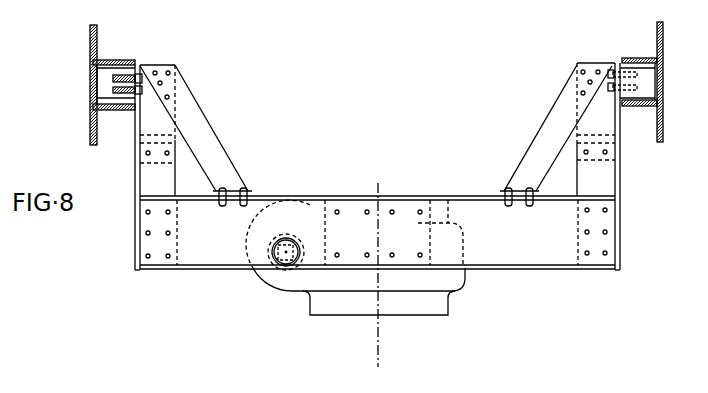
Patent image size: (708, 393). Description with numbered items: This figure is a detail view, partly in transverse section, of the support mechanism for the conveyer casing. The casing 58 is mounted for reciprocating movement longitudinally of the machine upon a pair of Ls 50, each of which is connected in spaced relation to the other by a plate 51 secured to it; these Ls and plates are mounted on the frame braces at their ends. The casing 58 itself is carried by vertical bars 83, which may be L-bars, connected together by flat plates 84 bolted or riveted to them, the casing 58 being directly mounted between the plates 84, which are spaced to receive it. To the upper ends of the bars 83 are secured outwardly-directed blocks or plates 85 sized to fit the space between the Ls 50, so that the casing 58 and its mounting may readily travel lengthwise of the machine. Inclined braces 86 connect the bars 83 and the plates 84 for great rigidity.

The Ls 50 is at (97, 142).
The plate 51 is at (90, 46).
The casing 58 is at (265, 287).
The vertical bars 83 is at (377, 166).
The flat plates 84 is at (377, 232).
The outwardly-directed blocks or plates 85 is at (385, 82).
The inclined braces 86 is at (376, 135).